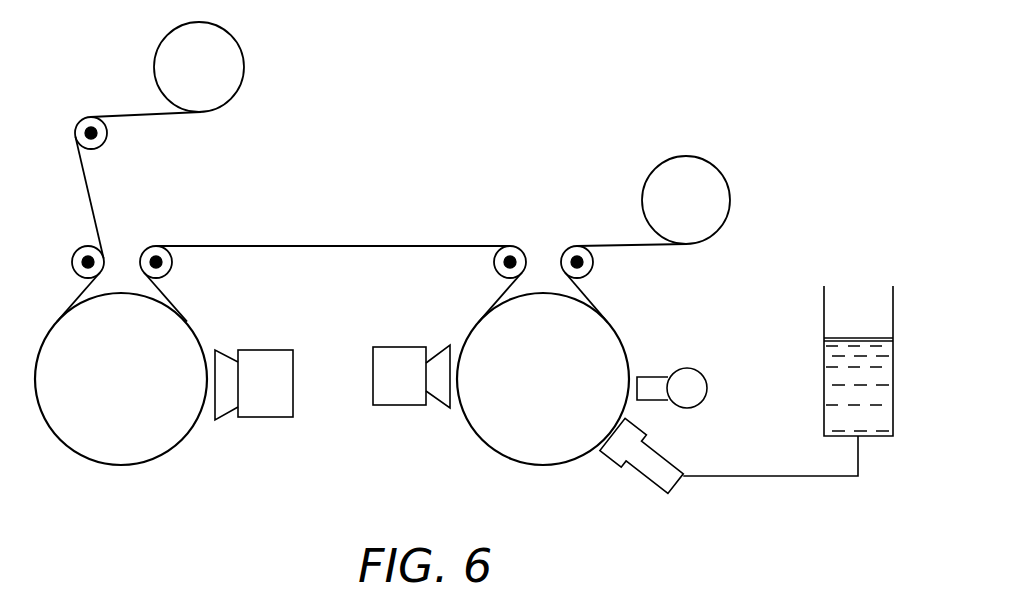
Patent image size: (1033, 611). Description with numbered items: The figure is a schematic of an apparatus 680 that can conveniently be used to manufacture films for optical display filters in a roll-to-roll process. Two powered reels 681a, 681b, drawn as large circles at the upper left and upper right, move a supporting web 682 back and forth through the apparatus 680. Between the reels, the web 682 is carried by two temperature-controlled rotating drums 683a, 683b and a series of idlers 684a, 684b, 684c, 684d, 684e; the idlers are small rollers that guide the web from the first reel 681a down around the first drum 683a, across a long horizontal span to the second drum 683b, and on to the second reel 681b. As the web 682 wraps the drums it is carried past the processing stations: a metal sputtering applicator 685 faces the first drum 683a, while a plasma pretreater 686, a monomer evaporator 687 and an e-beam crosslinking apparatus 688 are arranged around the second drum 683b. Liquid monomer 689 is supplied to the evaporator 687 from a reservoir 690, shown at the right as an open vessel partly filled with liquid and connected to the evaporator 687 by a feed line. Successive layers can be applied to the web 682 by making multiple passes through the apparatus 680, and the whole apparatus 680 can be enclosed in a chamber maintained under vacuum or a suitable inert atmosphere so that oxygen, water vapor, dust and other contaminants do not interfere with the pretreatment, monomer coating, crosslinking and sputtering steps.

The apparatus 680 is at (411, 127).
The powered reel 681a is at (218, 50).
The powered reel 681b is at (658, 183).
The supporting web 682 is at (322, 244).
The temperature-controlled rotating drum 683a is at (117, 452).
The temperature-controlled rotating drum 683b is at (542, 450).
The idler 684a is at (83, 122).
The idler 684b is at (78, 262).
The idler 684c is at (163, 263).
The idler 684d is at (503, 262).
The idler 684e is at (586, 266).
The metal sputtering applicator 685 is at (270, 405).
The plasma pretreater 686 is at (395, 398).
The monomer evaporator 687 is at (662, 468).
The e-beam crosslinking apparatus 688 is at (688, 380).
The liquid monomer 689 is at (836, 396).
The reservoir 690 is at (824, 318).